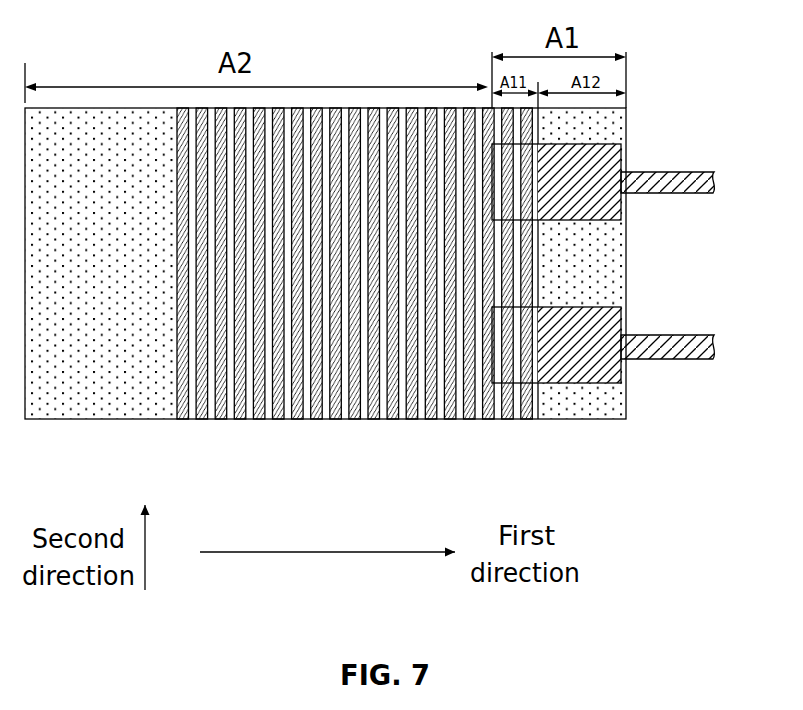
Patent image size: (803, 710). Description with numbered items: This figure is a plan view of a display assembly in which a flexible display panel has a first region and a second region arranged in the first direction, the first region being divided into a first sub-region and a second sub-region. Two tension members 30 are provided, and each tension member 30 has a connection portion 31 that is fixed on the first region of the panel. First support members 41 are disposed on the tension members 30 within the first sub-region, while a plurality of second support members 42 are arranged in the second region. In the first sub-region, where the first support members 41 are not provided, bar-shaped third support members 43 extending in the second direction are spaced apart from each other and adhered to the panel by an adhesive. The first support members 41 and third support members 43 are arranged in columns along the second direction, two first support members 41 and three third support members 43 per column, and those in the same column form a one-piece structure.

The tension member 30 is at (658, 162).
The connection portion 31 is at (610, 163).
The first support member 41 is at (523, 362).
The second support member 42 is at (260, 419).
The third support member 43 is at (505, 419).